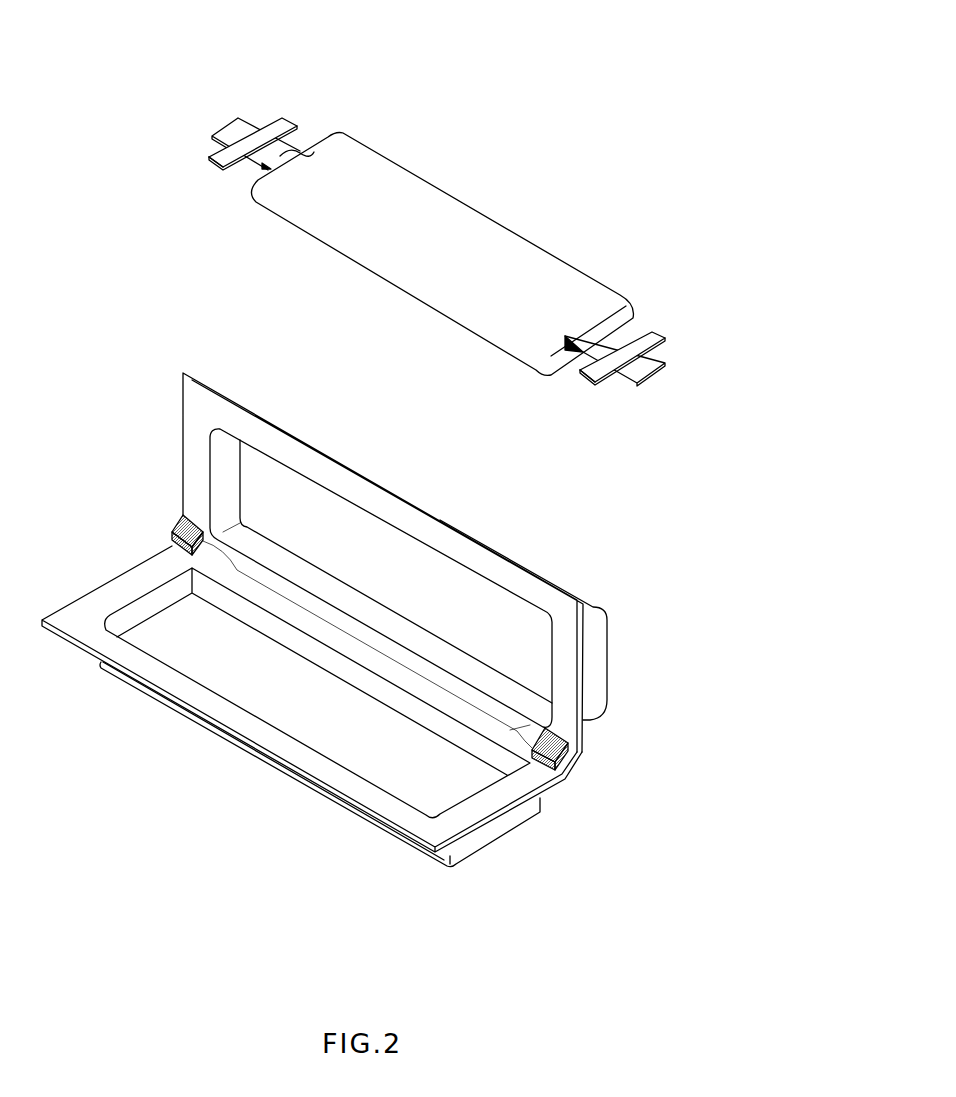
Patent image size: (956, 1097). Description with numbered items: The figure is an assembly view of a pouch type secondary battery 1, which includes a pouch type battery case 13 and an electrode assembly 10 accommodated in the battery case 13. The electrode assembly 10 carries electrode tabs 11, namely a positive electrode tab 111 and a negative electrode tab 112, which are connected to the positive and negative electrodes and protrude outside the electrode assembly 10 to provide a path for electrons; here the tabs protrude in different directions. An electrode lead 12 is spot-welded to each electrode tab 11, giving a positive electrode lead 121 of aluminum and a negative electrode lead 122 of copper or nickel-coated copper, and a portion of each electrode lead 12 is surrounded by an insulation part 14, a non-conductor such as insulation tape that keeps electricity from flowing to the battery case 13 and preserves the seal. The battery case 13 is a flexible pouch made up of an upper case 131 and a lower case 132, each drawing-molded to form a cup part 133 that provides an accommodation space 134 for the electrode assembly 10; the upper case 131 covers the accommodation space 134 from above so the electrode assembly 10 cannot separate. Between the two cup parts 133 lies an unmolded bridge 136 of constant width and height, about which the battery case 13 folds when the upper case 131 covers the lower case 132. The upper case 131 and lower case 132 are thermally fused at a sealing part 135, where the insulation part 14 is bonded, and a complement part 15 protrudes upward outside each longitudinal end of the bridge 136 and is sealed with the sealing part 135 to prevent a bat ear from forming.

The pouch type secondary battery 1 is at (576, 66).
The electrode assembly 10 is at (688, 250).
The electrode tabs 11 is at (573, 164).
The positive electrode tab 111 is at (587, 332).
The negative electrode tab 112 is at (298, 155).
The electrode lead 12 is at (517, 432).
The positive electrode lead 121 is at (593, 376).
The negative electrode lead 122 is at (222, 168).
The battery case 13 is at (100, 430).
The upper case 131 is at (193, 435).
The lower case 132 is at (98, 597).
The cup part 133 is at (494, 834).
The accommodation space 134 is at (435, 766).
The sealing part 135 is at (534, 778).
The bridge 136 is at (437, 673).
The insulation part 14 is at (277, 128).
The complement part 15 is at (176, 528).